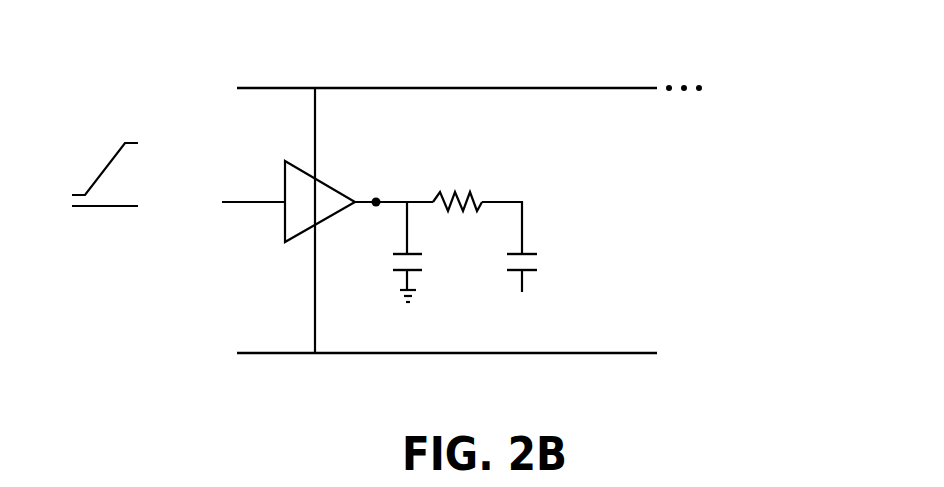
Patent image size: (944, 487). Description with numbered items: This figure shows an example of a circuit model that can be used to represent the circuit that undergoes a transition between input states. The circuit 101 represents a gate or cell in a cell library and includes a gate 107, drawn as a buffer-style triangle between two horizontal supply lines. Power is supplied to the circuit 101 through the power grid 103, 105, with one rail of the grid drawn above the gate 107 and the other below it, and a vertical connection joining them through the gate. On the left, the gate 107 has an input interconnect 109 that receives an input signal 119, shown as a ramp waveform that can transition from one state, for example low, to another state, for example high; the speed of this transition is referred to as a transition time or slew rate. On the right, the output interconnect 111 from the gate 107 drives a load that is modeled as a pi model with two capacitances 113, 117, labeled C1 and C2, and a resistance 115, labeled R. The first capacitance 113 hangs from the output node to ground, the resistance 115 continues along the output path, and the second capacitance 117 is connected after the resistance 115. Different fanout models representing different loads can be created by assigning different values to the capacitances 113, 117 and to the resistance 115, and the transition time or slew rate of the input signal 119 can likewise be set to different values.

The circuit 101 is at (776, 60).
The power grid 103 is at (587, 88).
The power grid 105 is at (587, 353).
The gate 107 is at (282, 223).
The input interconnect 109 is at (240, 197).
The output interconnect 111 is at (377, 192).
The capacitance 113 is at (390, 260).
The resistance 115 is at (475, 192).
The capacitance 117 is at (538, 245).
The input signal 119 is at (118, 121).